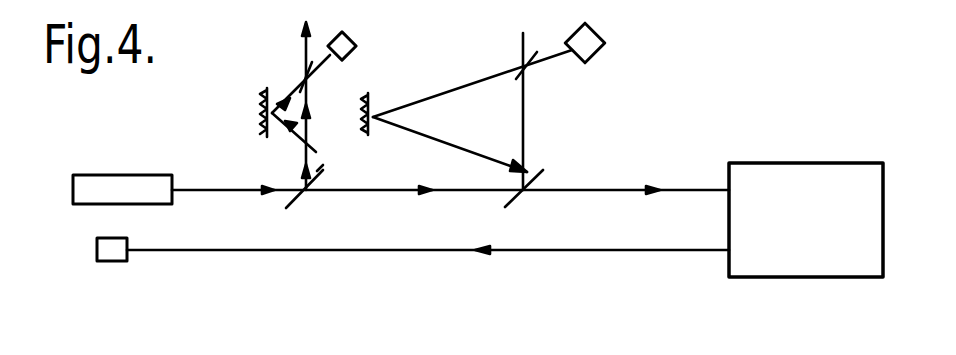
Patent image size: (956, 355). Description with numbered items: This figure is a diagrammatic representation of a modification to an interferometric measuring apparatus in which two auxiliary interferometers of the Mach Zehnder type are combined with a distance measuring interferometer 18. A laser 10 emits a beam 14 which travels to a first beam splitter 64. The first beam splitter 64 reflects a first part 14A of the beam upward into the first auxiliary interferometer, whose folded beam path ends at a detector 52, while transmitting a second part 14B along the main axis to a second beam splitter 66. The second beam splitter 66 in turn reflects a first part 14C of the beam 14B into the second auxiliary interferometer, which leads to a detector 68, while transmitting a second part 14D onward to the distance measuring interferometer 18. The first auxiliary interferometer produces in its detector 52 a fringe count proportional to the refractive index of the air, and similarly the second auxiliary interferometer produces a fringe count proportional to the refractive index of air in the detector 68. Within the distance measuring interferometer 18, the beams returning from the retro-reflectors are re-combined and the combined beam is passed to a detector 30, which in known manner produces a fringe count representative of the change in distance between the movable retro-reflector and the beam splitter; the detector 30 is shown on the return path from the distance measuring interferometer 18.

The laser 10 is at (88, 184).
The beam 14 is at (207, 190).
The first part of the beam 14A is at (308, 158).
The second part of the beam 14B is at (368, 192).
The first part of the beam 14B 14C is at (519, 172).
The second part of the beam 14B 14D is at (610, 190).
The distance measuring interferometer 18 is at (812, 224).
The detector 30 is at (97, 248).
The detector 52 is at (357, 45).
The first beam splitter 64 is at (295, 201).
The second beam splitter 66 is at (508, 203).
The detector 68 is at (604, 38).